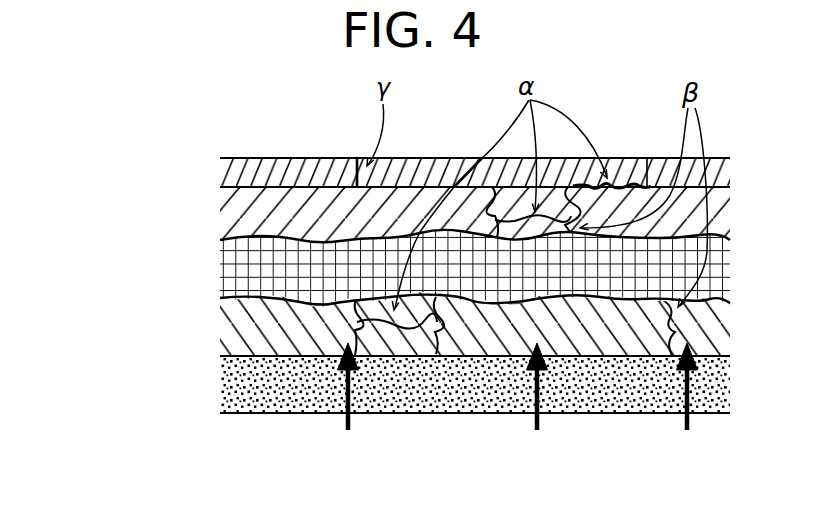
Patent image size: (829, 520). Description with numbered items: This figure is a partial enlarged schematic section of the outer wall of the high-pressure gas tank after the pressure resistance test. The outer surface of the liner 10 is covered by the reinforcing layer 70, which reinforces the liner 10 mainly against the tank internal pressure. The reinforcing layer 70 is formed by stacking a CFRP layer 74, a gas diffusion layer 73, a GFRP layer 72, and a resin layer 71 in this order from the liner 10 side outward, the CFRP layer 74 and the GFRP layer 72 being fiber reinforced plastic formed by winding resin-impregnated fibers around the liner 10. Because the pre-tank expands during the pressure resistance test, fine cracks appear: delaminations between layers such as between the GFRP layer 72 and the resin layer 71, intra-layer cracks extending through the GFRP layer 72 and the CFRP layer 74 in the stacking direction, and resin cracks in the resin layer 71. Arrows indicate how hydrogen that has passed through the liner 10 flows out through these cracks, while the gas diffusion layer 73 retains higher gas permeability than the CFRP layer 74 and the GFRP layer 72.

The reinforcing layer 70 is at (142, 160).
The resin layer 71 is at (220, 172).
The GFRP layer 72 is at (220, 214).
The gas diffusion layer 73 is at (220, 270).
The CFRP layer 74 is at (220, 325).
The liner 10 is at (220, 384).